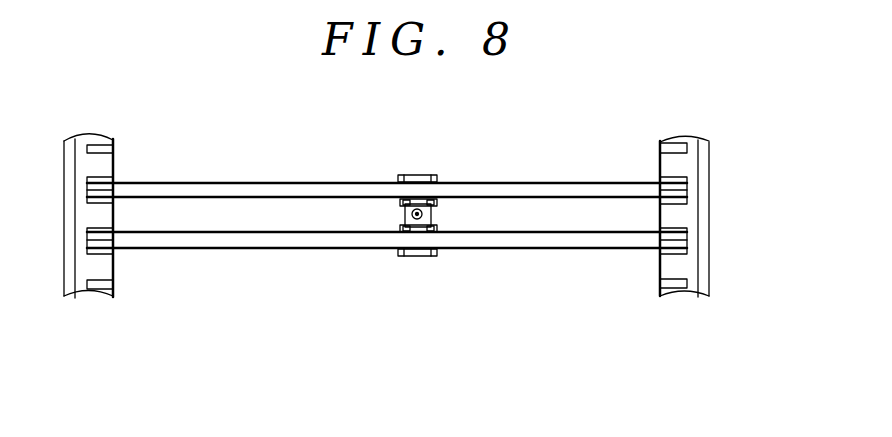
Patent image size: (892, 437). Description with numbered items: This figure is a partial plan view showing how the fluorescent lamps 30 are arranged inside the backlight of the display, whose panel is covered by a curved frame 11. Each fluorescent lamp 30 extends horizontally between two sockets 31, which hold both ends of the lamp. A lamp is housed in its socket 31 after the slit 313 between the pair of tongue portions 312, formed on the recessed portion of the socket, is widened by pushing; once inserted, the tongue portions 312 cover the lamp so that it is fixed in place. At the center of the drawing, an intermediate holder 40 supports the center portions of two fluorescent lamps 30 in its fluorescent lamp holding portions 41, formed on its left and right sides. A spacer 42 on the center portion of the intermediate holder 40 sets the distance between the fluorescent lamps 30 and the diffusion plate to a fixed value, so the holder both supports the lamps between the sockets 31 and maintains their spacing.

The frame 11 is at (702, 288).
The fluorescent lamp 30 is at (538, 181).
The socket 31 is at (693, 160).
The tongue portions 312 is at (684, 179).
The slit 313 is at (684, 190).
The intermediate holder 40 is at (420, 174).
The fluorescent lamp holding portion 41 is at (416, 257).
The spacer 42 is at (403, 213).